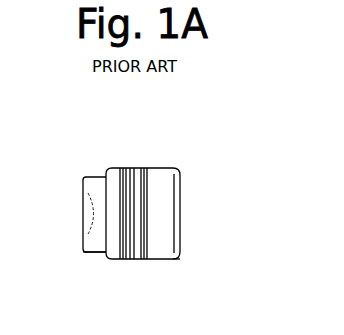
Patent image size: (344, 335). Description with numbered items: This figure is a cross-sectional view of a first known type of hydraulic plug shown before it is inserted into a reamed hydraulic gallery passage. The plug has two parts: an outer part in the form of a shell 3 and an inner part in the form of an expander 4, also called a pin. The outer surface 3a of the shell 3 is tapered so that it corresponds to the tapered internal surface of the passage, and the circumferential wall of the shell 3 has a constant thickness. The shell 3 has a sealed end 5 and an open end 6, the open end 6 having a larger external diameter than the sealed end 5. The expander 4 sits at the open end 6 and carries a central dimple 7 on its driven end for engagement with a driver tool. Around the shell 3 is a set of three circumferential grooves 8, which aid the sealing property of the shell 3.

The shell 3 is at (167, 177).
The outer surface 3a is at (163, 259).
The expander 4 is at (90, 253).
The sealed end 5 is at (181, 202).
The open end 6 is at (103, 173).
The central dimple 7 is at (83, 215).
The circumferential grooves 8 is at (120, 167).